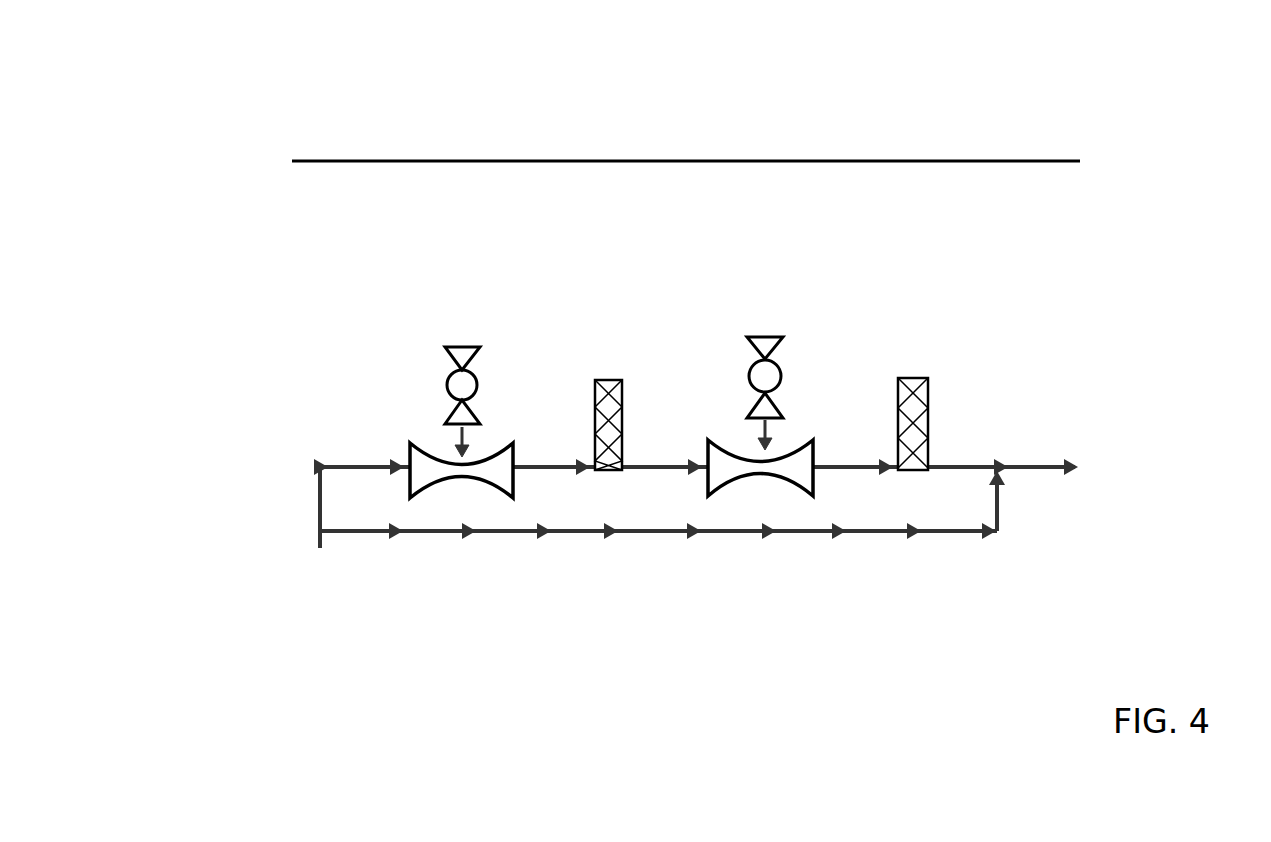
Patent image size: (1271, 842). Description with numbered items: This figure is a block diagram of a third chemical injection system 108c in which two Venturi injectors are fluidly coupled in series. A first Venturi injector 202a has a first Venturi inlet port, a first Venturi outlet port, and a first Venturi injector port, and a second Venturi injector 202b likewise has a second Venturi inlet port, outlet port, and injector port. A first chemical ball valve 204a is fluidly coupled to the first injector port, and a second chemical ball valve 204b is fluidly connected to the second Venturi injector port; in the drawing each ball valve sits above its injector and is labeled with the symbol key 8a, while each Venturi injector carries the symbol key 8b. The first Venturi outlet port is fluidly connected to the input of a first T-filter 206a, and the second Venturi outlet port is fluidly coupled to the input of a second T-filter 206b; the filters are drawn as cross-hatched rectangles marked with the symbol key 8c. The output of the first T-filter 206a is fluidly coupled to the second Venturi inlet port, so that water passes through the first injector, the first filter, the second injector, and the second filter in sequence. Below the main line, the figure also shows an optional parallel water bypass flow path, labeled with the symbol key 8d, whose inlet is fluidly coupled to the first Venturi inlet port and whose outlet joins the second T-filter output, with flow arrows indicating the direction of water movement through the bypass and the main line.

The chemical injection system 108c is at (254, 166).
The first Venturi injector 202a is at (418, 447).
The second Venturi injector 202b is at (712, 440).
The first chemical ball valve 204a is at (449, 378).
The second chemical ball valve 204b is at (782, 345).
The first T-filter 206a is at (598, 382).
The second T-filter 206b is at (930, 380).
The valve 8a is at (685, 317).
The nozzle 8b is at (475, 302).
The filter 8c is at (801, 292).
The bypass conduit 8d is at (696, 503).